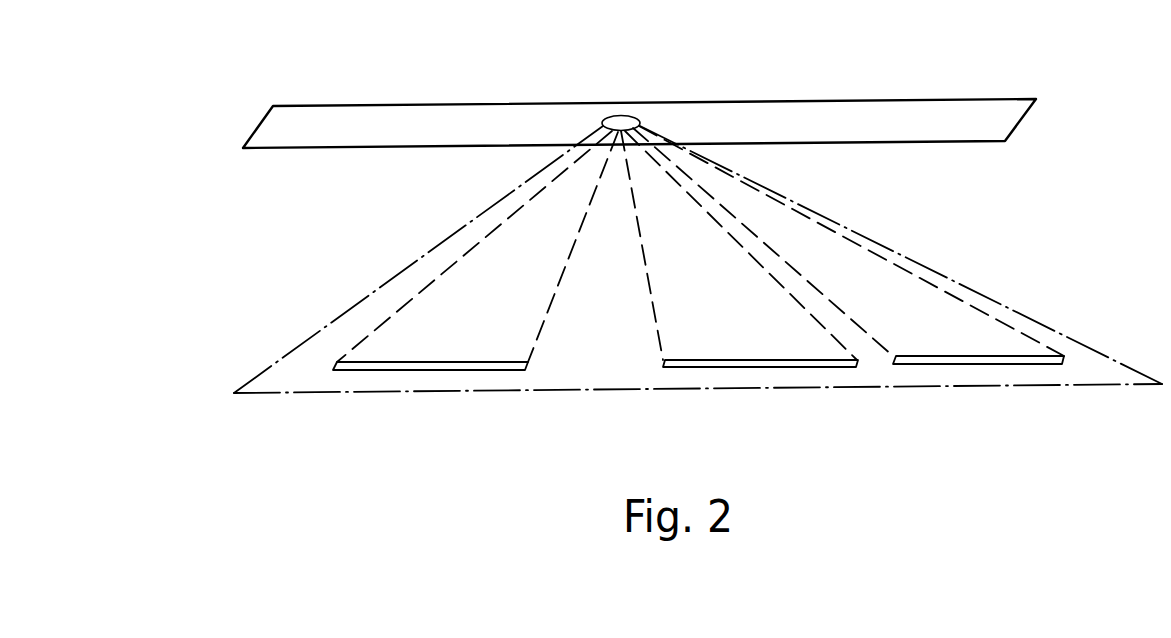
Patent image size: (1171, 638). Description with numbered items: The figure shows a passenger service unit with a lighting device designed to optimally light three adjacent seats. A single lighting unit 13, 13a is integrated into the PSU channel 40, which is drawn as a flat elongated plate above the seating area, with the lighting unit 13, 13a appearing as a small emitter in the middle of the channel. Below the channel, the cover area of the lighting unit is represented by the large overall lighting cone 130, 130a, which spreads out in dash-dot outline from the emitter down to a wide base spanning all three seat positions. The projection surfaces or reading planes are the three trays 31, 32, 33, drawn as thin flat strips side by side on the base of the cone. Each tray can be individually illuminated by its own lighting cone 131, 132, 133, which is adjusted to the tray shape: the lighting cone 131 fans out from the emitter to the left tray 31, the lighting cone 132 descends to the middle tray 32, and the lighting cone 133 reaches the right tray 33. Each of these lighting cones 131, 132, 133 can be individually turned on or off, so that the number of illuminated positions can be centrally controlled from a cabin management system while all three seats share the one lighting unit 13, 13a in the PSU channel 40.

The lighting unit 13 is at (645, 78).
The lighting unit 13a is at (618, 125).
The PSU channel 40 is at (953, 110).
The lighting cone 130 is at (633, 259).
The lighting cone 130a is at (293, 373).
The lighting cone 131 is at (450, 285).
The lighting cone 132 is at (663, 290).
The lighting cone 133 is at (957, 312).
The tray 31 is at (458, 366).
The tray 32 is at (751, 363).
The tray 33 is at (975, 363).